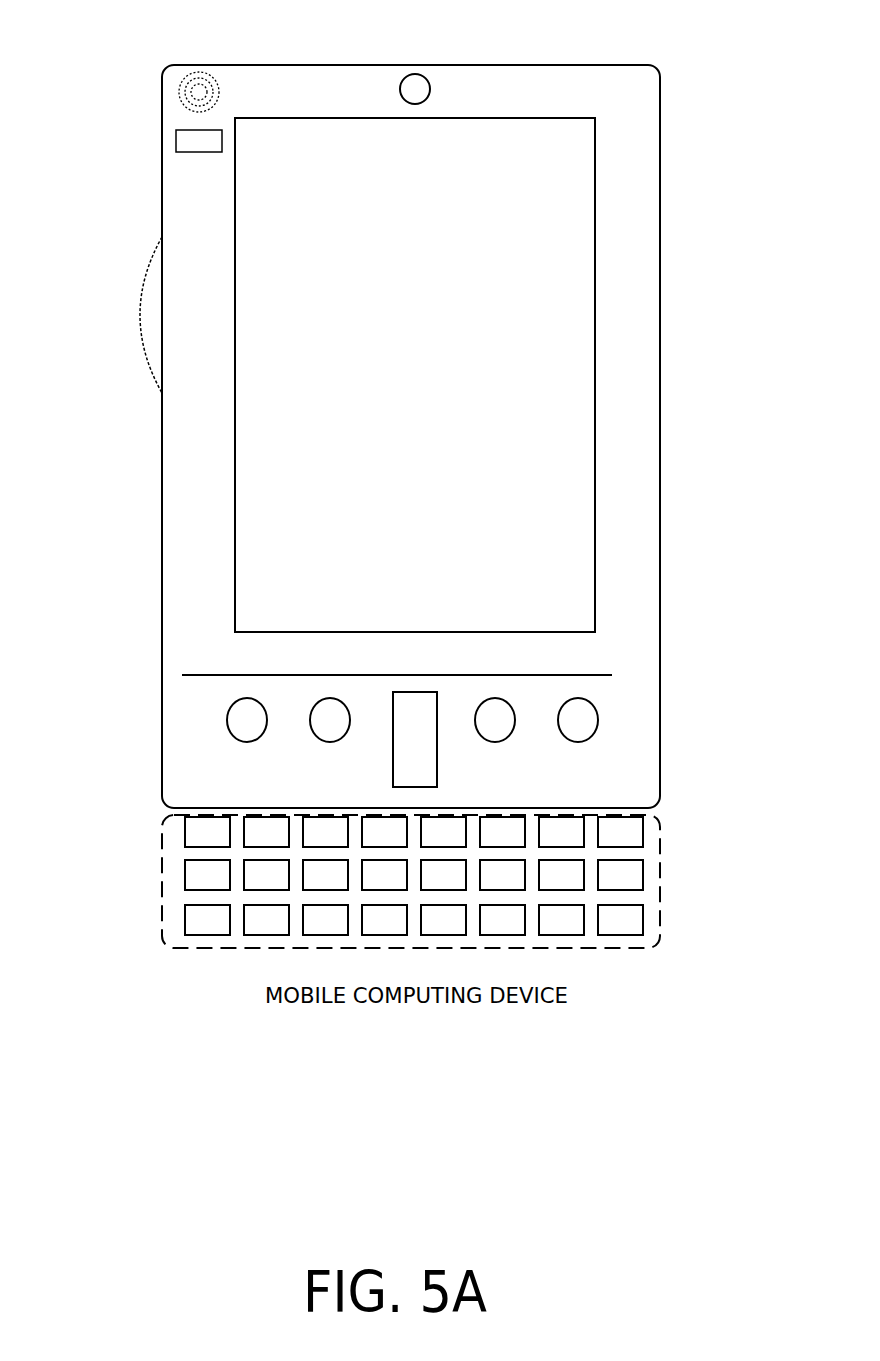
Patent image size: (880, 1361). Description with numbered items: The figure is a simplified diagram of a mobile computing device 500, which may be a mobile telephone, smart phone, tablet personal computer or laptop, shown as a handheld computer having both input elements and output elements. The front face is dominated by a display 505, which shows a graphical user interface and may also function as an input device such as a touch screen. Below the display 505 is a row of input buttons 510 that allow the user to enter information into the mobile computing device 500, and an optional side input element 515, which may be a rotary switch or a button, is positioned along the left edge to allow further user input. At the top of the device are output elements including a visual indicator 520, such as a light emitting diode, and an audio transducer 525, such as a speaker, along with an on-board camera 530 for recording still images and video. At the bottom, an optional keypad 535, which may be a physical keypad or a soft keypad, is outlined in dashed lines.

The mobile computing device 500 is at (660, 93).
The display 505 is at (263, 468).
The input buttons 510 is at (393, 748).
The side input element 515 is at (140, 300).
The visual indicator 520 is at (178, 136).
The audio transducer 525 is at (180, 85).
The on-board camera 530 is at (415, 74).
The keypad 535 is at (175, 878).